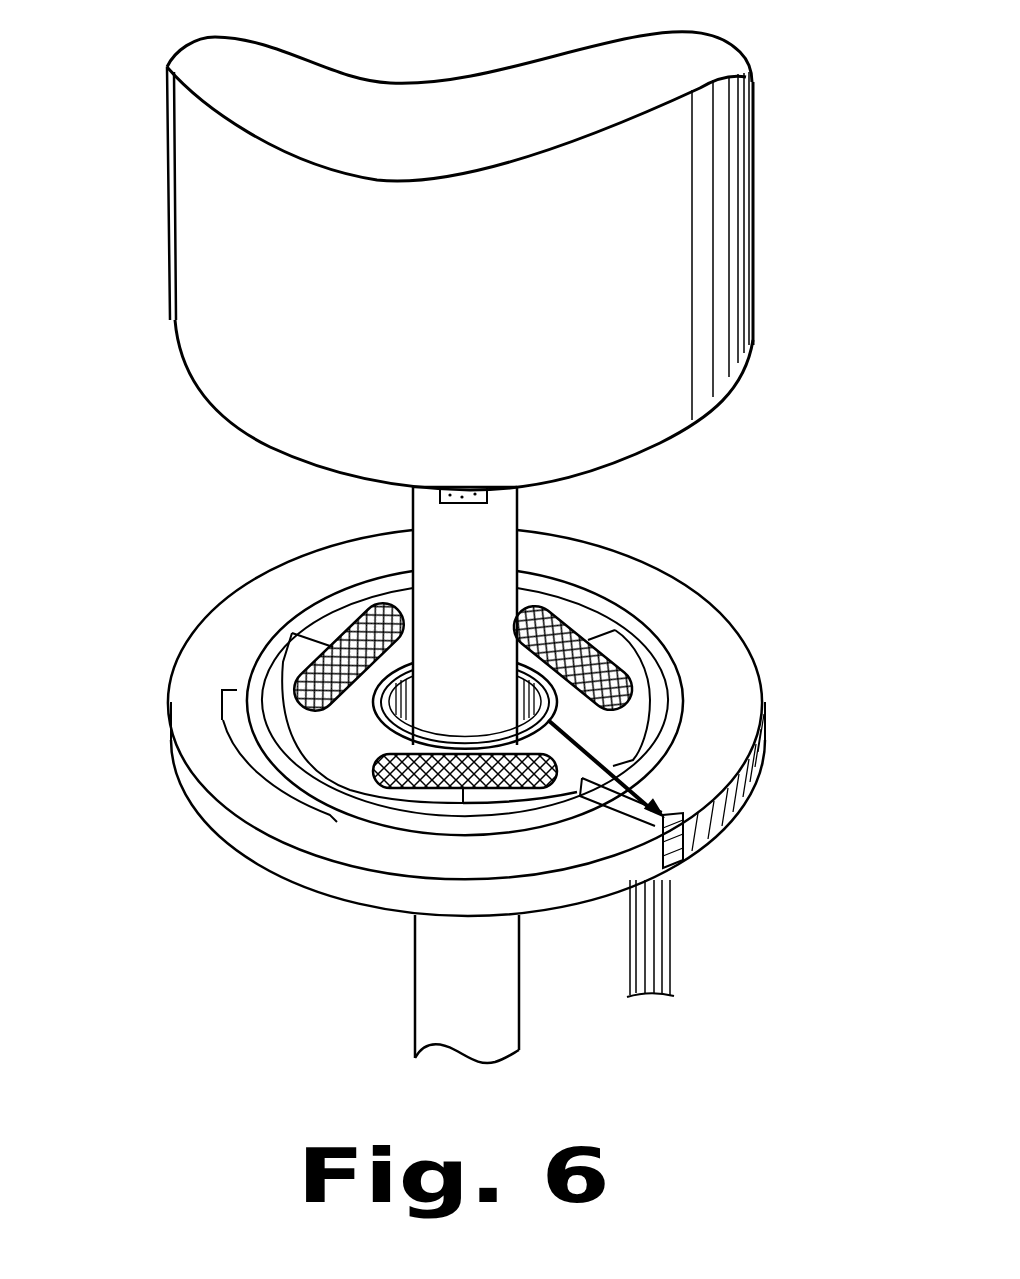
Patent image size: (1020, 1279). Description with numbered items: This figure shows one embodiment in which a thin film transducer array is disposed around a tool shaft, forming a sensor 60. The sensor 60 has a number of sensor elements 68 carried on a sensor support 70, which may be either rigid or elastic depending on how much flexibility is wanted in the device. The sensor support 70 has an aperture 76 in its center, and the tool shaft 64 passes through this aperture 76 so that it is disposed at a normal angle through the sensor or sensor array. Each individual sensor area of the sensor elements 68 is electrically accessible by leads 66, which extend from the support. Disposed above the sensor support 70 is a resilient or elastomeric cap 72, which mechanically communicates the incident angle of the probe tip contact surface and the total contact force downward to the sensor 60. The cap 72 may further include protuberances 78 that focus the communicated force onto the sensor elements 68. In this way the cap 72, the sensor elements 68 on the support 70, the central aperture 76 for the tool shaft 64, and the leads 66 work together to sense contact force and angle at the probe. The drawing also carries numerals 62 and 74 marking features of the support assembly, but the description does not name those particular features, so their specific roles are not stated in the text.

The sensor 60 is at (163, 490).
The groove 62 is at (239, 762).
The tool shaft 64 is at (430, 1025).
The leads 66 is at (672, 930).
The sensor elements 68 is at (393, 612).
The sensor support 70 is at (731, 692).
The cap 72 is at (754, 231).
The inner platform 74 is at (655, 653).
The aperture 76 is at (395, 738).
The protuberances 78 is at (487, 494).